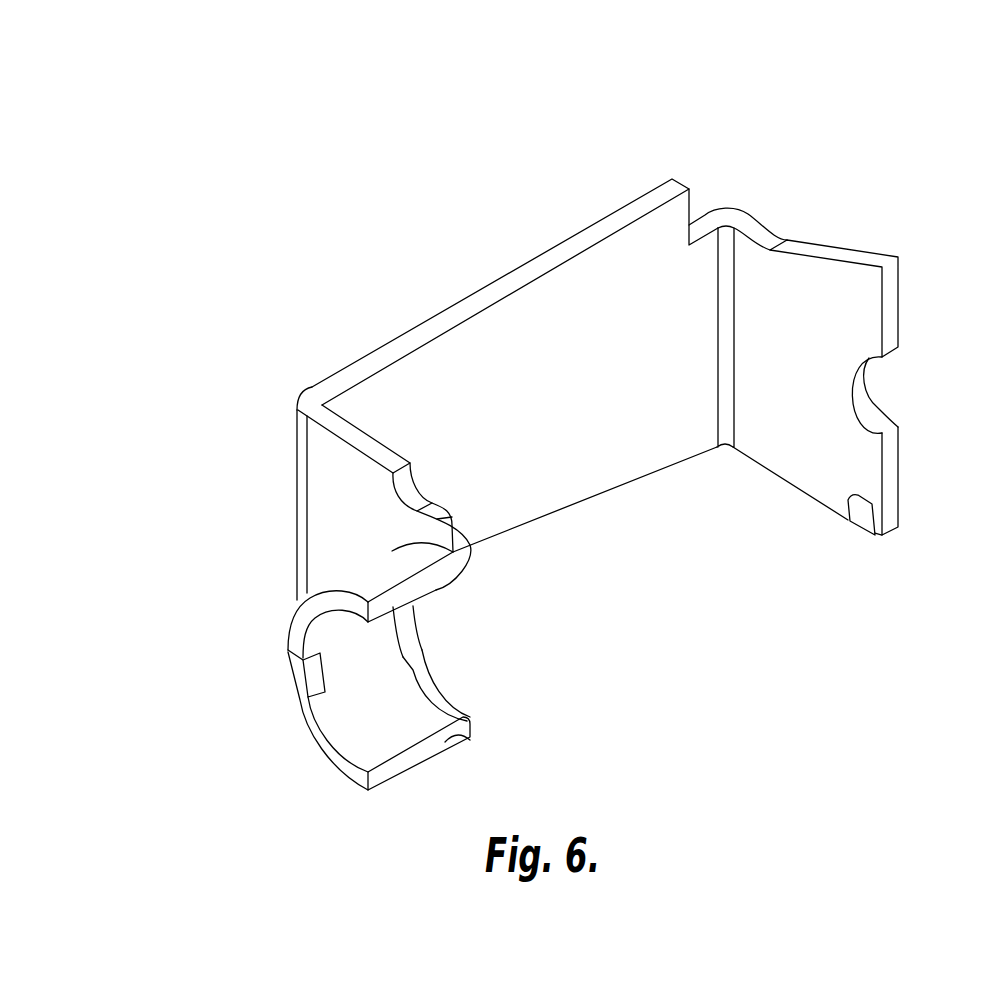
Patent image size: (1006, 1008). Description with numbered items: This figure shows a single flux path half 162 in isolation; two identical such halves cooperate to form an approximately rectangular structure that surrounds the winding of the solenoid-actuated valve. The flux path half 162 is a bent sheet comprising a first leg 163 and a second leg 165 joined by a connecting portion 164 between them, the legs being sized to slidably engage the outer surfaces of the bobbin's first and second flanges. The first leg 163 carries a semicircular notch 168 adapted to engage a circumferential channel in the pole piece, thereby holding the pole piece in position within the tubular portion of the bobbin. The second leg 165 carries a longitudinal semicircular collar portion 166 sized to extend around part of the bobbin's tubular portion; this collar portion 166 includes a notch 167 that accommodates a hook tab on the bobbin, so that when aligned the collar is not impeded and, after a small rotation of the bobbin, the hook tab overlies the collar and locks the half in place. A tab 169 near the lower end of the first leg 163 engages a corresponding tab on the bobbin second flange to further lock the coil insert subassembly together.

The flux path half 162 is at (558, 150).
The first leg 163 is at (838, 268).
The connecting portion 164 is at (430, 367).
The second leg 165 is at (330, 480).
The collar portion 166 is at (368, 585).
The notch 167 is at (310, 692).
The semicircular notch 168 is at (873, 418).
The tab 169 is at (860, 523).